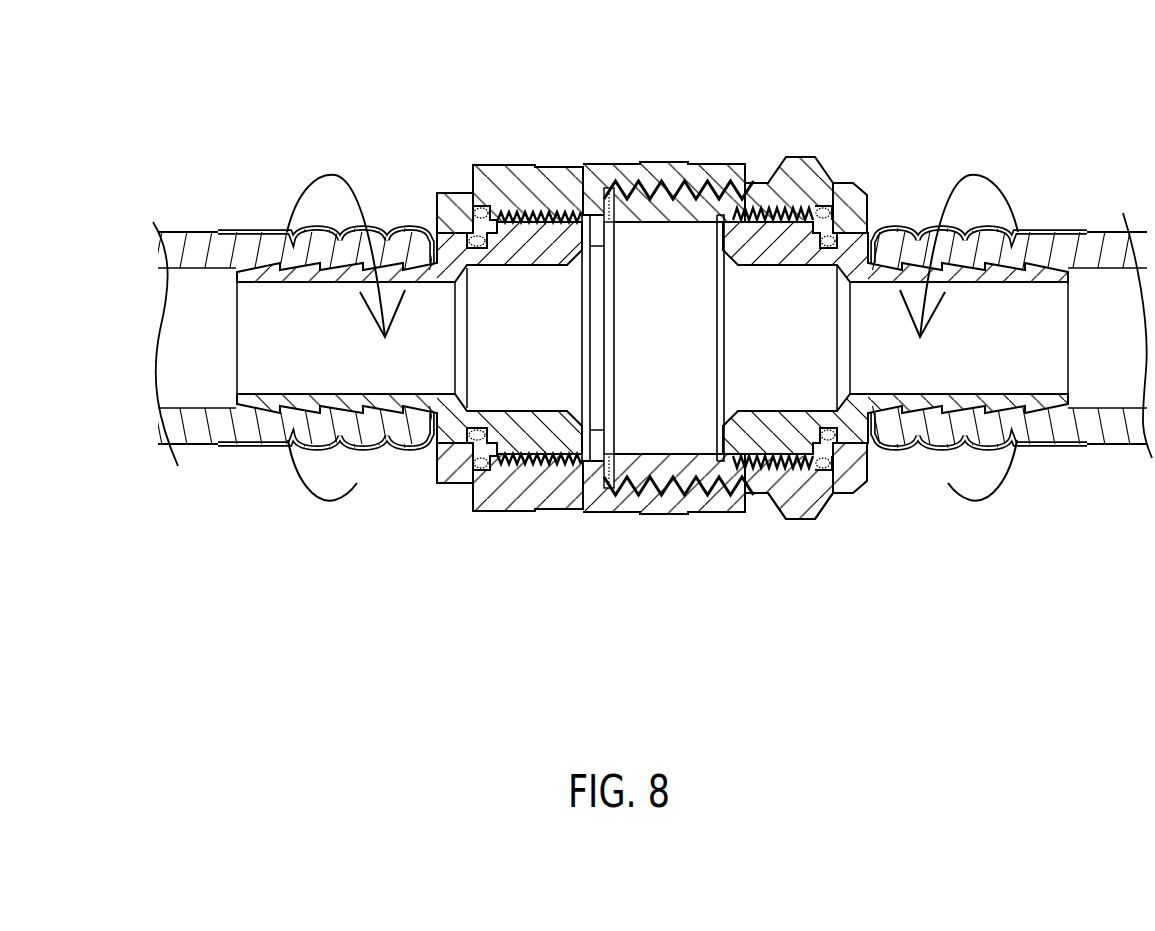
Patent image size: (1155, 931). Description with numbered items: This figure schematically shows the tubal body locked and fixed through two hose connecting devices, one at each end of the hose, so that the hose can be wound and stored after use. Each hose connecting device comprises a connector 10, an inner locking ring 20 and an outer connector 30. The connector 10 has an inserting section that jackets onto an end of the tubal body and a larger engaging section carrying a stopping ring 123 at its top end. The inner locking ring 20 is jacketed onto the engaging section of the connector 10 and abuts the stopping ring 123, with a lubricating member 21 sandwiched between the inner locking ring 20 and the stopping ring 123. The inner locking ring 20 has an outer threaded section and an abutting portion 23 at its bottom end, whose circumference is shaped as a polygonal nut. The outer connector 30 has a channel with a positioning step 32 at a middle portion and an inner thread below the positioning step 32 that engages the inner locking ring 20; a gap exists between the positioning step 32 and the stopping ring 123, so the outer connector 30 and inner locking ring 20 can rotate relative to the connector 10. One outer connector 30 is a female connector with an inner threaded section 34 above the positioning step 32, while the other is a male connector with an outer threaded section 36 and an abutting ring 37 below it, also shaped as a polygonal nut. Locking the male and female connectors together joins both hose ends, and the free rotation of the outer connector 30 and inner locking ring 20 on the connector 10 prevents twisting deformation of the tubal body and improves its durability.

The connector 10 is at (503, 233).
The inner locking ring 20 is at (658, 331).
The lubricating member 21 is at (560, 462).
The abutting portion 23 is at (455, 472).
The outer connector 30 is at (655, 329).
The positioning step 32 is at (610, 455).
The inner threaded section 34 is at (667, 267).
The outer threaded section 36 is at (699, 184).
The abutting ring 37 is at (798, 502).
The stopping ring 123 is at (578, 216).